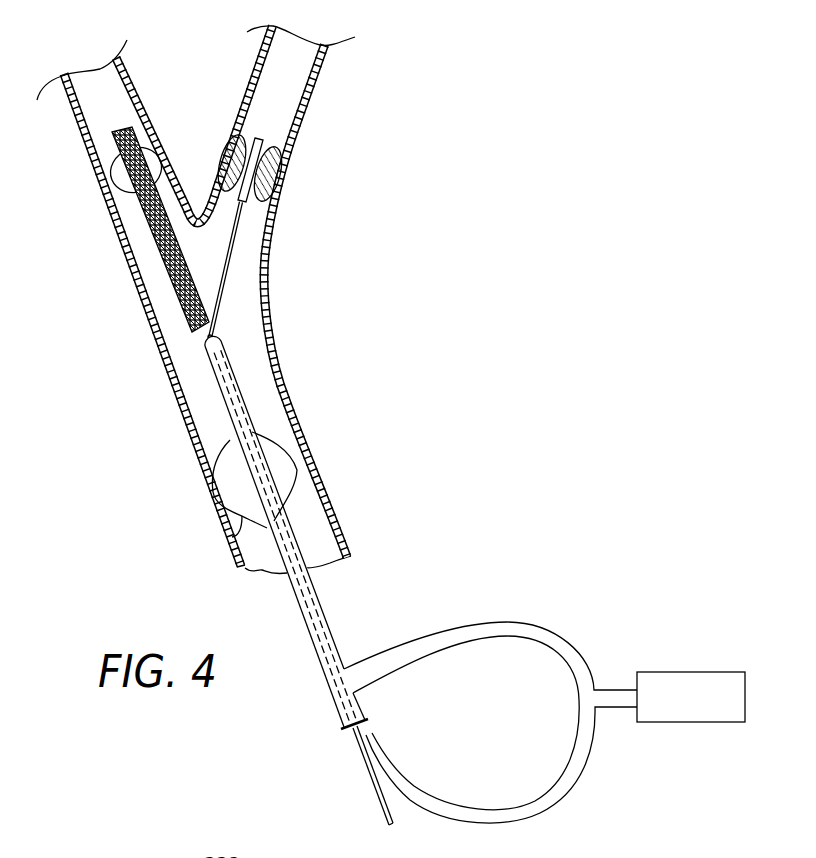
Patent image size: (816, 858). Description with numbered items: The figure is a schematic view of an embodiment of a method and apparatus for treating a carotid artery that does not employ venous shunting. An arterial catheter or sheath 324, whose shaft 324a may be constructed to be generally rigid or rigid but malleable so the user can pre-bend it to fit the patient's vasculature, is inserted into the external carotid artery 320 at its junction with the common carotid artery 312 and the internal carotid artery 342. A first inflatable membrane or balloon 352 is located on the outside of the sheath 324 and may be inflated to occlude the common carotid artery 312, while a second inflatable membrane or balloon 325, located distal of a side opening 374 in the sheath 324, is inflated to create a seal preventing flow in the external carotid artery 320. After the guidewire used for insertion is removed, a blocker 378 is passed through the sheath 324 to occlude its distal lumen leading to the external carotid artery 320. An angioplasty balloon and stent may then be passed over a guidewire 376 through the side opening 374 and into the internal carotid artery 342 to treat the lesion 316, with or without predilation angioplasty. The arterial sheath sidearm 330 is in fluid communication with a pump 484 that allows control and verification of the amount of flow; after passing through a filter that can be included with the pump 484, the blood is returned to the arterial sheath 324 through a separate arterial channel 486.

The common carotid artery (CCA) 312 is at (183, 427).
The external carotid artery (ECA) 320 is at (138, 97).
The internal carotid artery 342 is at (318, 86).
The lesion 316 is at (286, 164).
The second inflatable membrane or balloon 325 is at (118, 199).
The blocker 378 is at (166, 250).
The opening 374 is at (228, 331).
The arterial catheter/sheath 324 is at (305, 532).
The shaft 324a is at (279, 529).
The first inflatable membrane or balloon 352 is at (232, 537).
The arterial sheath sidearm 330 is at (415, 642).
The pump 484 is at (675, 707).
The separate arterial channel 486 is at (547, 802).
The guidewire 376 is at (373, 788).